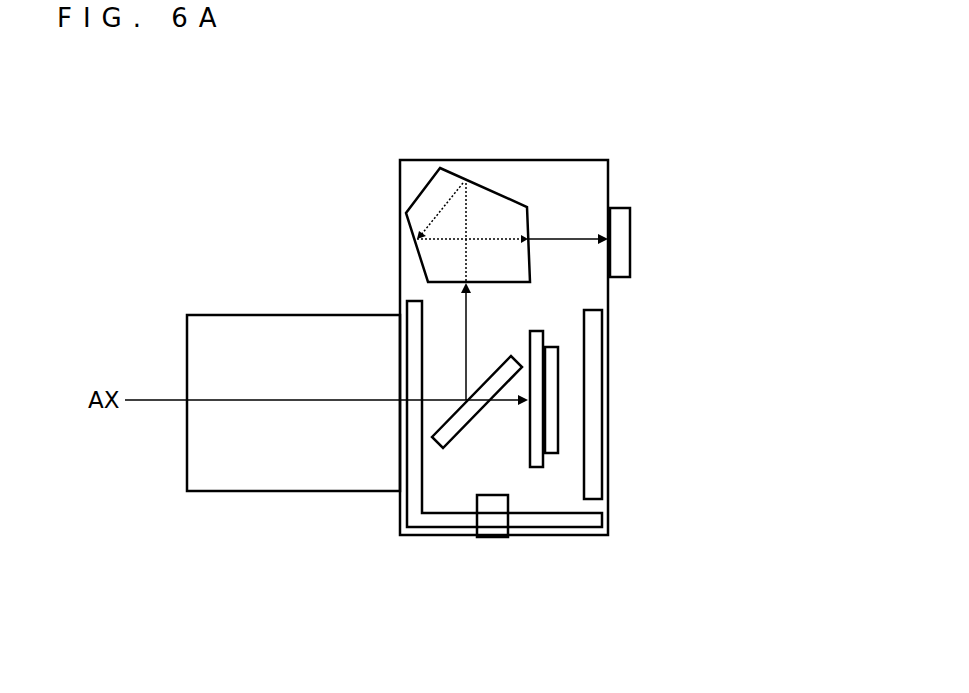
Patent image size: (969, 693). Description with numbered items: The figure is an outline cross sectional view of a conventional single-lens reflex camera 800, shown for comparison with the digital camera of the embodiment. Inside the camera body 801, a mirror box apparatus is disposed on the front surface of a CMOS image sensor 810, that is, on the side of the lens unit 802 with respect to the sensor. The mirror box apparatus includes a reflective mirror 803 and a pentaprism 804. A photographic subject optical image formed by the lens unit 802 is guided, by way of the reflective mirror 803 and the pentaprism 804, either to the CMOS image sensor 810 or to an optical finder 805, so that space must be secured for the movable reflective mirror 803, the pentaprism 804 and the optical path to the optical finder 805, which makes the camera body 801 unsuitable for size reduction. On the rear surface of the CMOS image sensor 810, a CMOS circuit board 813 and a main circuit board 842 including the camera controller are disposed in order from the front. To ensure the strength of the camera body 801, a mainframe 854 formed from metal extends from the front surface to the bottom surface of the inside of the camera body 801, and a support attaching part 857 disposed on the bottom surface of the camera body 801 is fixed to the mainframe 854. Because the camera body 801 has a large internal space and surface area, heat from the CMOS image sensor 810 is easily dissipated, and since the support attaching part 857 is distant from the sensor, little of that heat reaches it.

The single-lens reflex camera 800 is at (357, 134).
The camera body 801 is at (480, 148).
The lens unit 802 is at (281, 499).
The reflective mirror 803 is at (448, 432).
The pentaprism 804 is at (431, 203).
The optical finder 805 is at (622, 226).
The CMOS image sensor 810 is at (545, 342).
The CMOS circuit board 813 is at (548, 430).
The main circuit board 842 is at (593, 487).
The mainframe 854 is at (416, 313).
The support attaching part 857 is at (497, 528).